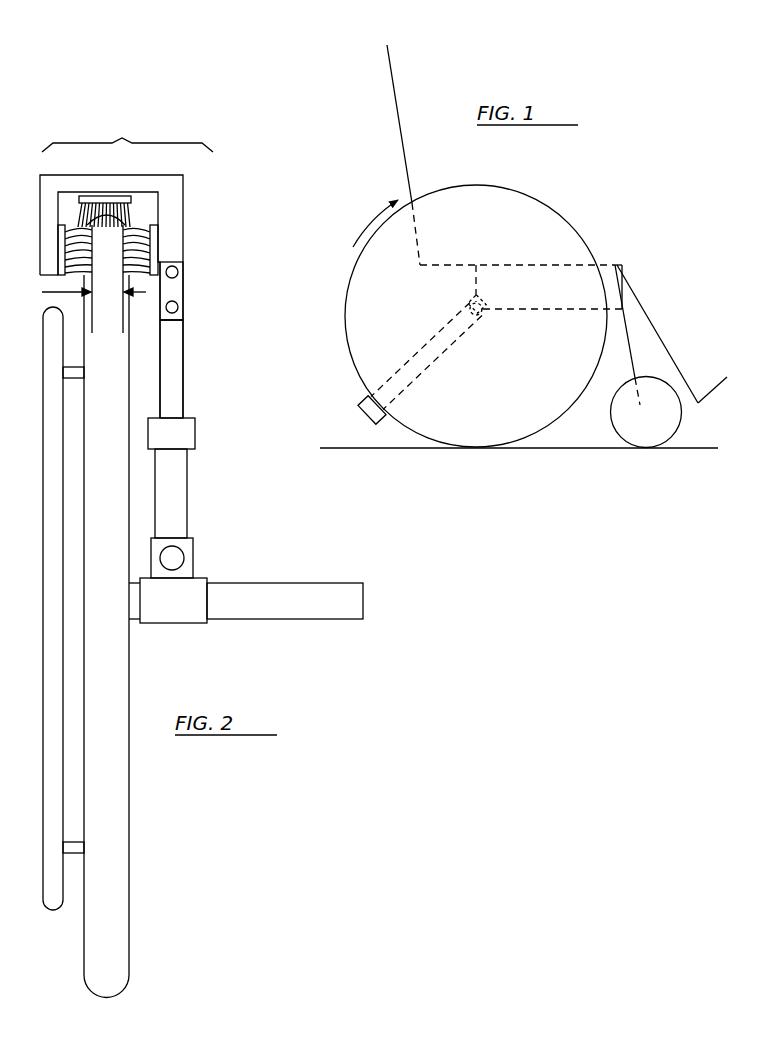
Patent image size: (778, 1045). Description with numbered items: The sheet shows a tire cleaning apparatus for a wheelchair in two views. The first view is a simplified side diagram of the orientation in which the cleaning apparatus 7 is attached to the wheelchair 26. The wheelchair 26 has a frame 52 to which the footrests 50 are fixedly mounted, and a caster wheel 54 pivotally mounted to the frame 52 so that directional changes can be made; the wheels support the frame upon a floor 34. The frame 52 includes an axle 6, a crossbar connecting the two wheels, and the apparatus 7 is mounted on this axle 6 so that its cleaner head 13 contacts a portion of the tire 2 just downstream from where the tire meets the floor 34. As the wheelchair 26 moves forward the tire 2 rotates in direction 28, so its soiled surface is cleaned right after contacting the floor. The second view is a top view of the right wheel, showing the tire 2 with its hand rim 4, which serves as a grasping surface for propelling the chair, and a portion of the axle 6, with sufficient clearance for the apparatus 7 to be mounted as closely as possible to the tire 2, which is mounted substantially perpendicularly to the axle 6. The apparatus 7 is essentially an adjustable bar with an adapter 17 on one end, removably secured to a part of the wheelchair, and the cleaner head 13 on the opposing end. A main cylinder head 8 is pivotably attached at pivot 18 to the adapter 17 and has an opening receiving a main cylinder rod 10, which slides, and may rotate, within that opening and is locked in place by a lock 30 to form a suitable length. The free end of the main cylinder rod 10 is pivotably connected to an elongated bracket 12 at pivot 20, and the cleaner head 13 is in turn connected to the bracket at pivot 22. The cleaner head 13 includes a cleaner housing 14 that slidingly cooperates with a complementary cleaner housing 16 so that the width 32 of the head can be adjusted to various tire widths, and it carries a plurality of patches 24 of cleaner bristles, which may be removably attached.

In FIG. 1, the tire 2 is at (505, 186).
In FIG. 2, the tire 2 is at (129, 975).
In FIG. 2, the hand rim 4 is at (42, 505).
In FIG. 1, the axle 6 is at (471, 304).
In FIG. 2, the axle 6 is at (250, 583).
In FIG. 1, the cleaning apparatus 7 is at (410, 345).
In FIG. 2, the cleaning apparatus 7 is at (199, 341).
In FIG. 2, the main cylinder head 8 is at (188, 485).
In FIG. 2, the main cylinder rod 10 is at (184, 370).
In FIG. 2, the elongated bracket 12 is at (184, 291).
In FIG. 1, the cleaner head 13 is at (362, 407).
In FIG. 2, the cleaner head 13 is at (127, 134).
In FIG. 2, the cleaner housing 14 is at (185, 210).
In FIG. 2, the complementary cleaner housing 16 is at (106, 181).
In FIG. 2, the adapter 17 is at (182, 623).
In FIG. 2, the pivot 18 is at (184, 555).
In FIG. 2, the pivot 20 is at (178, 307).
In FIG. 2, the pivot 22 is at (178, 272).
In FIG. 2, the patches of cleaner bristles 24 is at (60, 225).
In FIG. 1, the wheelchair 26 is at (379, 88).
In FIG. 1, the direction of rotation 28 is at (378, 214).
In FIG. 2, the lock 30 is at (196, 431).
In FIG. 2, the width 32 is at (21, 300).
In FIG. 1, the floor 34 is at (348, 447).
In FIG. 1, the footrests 50 is at (651, 318).
In FIG. 1, the frame 52 is at (583, 310).
In FIG. 1, the caster wheel 54 is at (610, 406).